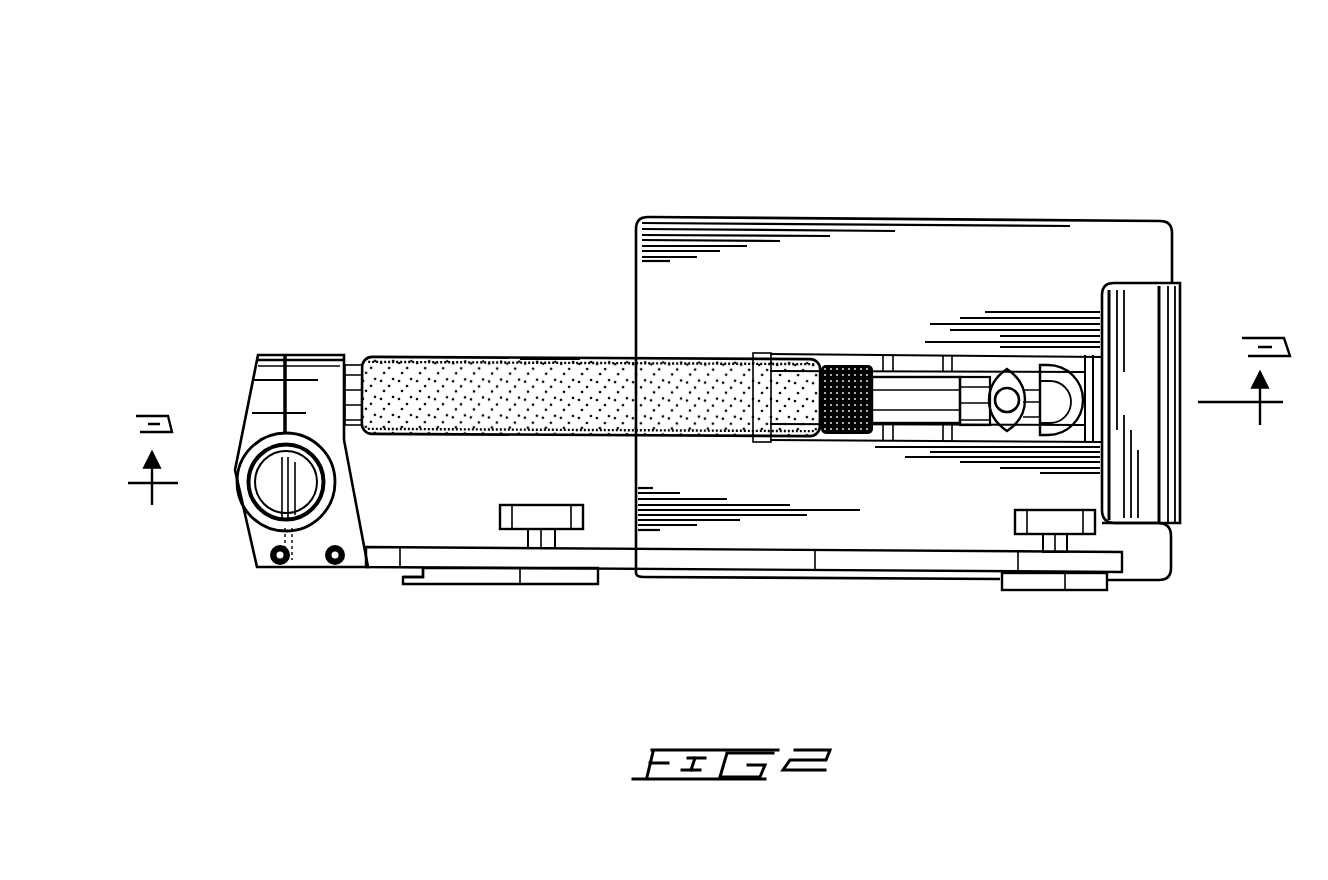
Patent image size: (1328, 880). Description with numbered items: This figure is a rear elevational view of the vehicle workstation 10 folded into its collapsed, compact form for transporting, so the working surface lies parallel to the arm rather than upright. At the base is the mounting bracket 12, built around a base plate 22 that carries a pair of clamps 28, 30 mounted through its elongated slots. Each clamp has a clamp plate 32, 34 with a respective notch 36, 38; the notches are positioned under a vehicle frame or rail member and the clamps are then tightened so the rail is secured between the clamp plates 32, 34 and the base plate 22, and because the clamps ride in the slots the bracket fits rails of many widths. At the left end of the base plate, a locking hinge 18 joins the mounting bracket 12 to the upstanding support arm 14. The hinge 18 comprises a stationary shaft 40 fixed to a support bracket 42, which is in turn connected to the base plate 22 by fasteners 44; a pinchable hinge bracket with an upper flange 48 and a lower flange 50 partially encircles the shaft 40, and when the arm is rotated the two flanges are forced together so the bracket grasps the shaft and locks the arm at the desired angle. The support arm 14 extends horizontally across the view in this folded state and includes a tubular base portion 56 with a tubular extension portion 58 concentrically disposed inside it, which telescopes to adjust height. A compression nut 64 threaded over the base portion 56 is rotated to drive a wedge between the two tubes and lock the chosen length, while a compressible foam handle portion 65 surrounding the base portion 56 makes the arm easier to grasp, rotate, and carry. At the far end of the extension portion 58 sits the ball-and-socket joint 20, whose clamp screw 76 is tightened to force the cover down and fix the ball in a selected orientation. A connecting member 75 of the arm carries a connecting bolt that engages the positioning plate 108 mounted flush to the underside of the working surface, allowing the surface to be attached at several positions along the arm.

The vehicle workstation 10 is at (748, 113).
The mounting bracket 12 is at (492, 588).
The upstanding support arm 14 is at (510, 352).
The locking hinge 18 is at (233, 547).
The ball-and-socket joint 20 is at (1047, 368).
The base plate 22 is at (710, 562).
The clamp 28 is at (545, 512).
The clamp 30 is at (1062, 516).
The clamp plate 32 is at (580, 576).
The clamp plate 34 is at (1026, 590).
The notch 36 is at (400, 572).
The notch 38 is at (1118, 582).
The stationary shaft 40 is at (262, 491).
The support bracket 42 is at (350, 511).
The fasteners 44 is at (320, 566).
The upper flange 48 is at (316, 360).
The lower flange 50 is at (262, 396).
The tubular base portion 56 is at (355, 382).
The tubular extension portion 58 is at (921, 406).
The compression nut 64 is at (870, 436).
The compressible foam handle portion 65 is at (549, 358).
The connecting member 75 is at (1086, 436).
The clamp screw 76 is at (1000, 378).
The positioning plate 108 is at (912, 366).